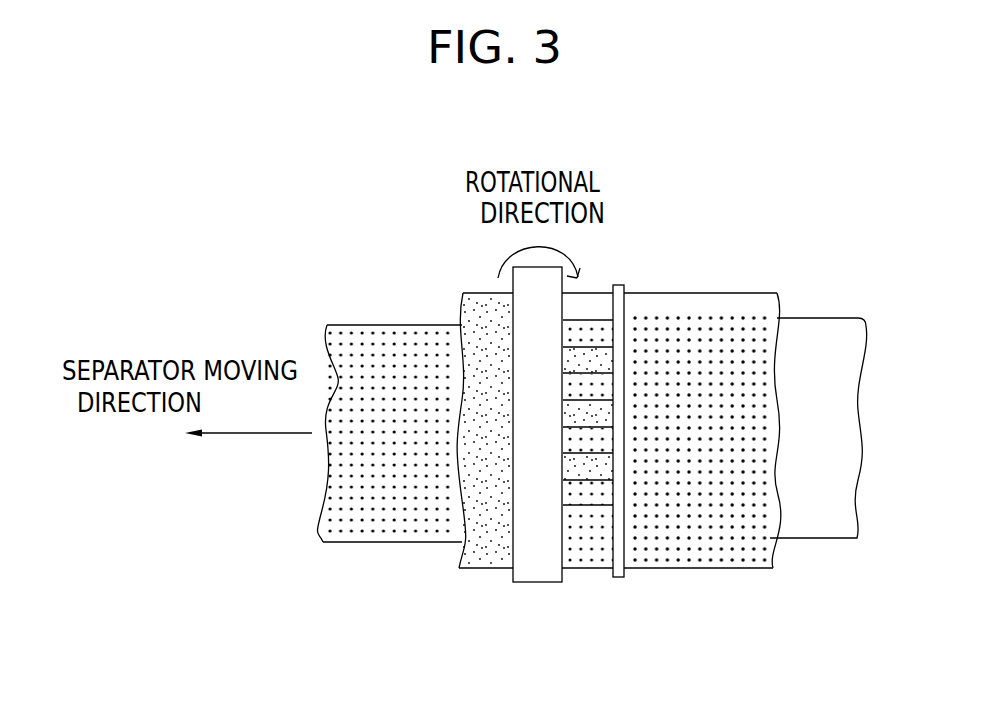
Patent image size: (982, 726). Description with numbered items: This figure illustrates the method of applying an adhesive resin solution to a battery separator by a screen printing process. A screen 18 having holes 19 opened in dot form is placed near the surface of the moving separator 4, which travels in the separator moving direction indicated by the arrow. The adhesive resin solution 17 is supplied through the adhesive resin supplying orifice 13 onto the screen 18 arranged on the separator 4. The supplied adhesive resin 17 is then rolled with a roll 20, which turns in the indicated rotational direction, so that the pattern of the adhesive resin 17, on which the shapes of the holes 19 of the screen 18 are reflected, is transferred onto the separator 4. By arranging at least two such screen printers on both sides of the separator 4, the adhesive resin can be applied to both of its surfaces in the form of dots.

The adhesive resin solution 17 is at (390, 332).
The screen 18 is at (710, 563).
The holes 19 is at (713, 318).
The separator 4 is at (822, 327).
The roll 20 is at (533, 577).
The adhesive resin supplying orifice 13 is at (617, 577).